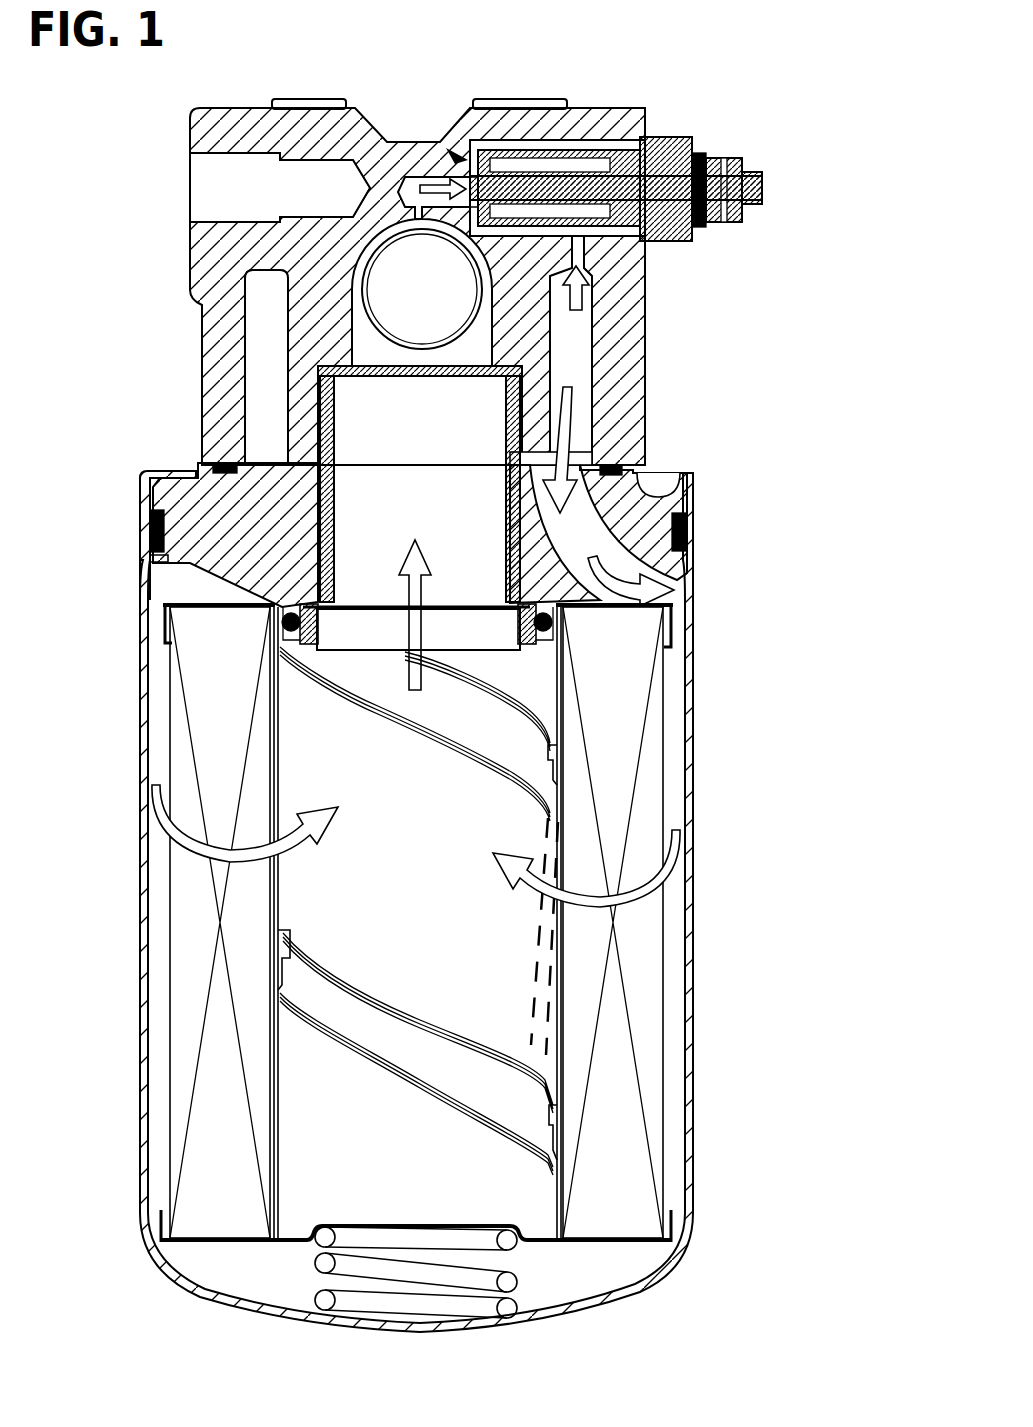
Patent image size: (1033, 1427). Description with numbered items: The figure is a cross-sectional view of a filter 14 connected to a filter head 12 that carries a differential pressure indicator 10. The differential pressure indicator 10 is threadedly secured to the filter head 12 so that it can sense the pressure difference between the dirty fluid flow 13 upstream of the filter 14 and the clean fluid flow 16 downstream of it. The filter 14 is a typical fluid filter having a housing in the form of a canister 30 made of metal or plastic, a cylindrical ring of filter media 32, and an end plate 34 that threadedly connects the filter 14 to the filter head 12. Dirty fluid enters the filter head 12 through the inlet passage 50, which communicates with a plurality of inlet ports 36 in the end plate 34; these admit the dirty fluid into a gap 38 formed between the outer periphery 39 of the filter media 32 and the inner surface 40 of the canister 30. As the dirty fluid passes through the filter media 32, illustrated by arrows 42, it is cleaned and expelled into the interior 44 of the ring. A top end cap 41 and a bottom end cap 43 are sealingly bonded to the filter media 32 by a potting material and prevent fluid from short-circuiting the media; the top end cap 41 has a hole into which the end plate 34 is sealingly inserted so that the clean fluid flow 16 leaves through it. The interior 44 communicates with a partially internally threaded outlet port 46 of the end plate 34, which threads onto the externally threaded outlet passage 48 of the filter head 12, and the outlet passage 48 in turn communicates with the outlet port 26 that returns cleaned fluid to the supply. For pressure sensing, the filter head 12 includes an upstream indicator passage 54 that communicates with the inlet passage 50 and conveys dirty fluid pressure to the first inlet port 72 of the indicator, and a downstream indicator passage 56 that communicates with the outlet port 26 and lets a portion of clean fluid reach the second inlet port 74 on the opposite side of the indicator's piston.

The differential pressure indicator 10 is at (697, 102).
The filter head 12 is at (188, 252).
The dirty fluid flow 13 is at (581, 292).
The filter 14 is at (795, 811).
The clean fluid flow 16 is at (433, 175).
The outlet port 26 is at (388, 295).
The canister 30 is at (145, 665).
The filter media 32 is at (213, 732).
The end plate 34 is at (152, 490).
The inlet ports 36 is at (572, 520).
The gap 38 is at (155, 1020).
The outer periphery 39 is at (665, 735).
The inner surface 40 is at (165, 1100).
The top end cap 41 is at (673, 626).
The arrows 42 is at (185, 855).
The bottom end cap 43 is at (688, 1252).
The interior 44 is at (310, 1123).
The outlet port 46 is at (473, 640).
The outlet passage 48 is at (375, 460).
The inlet passage 50 is at (262, 360).
The upstream indicator passage 54 is at (533, 150).
The downstream indicator passage 56 is at (392, 150).
The first inlet port 72 is at (584, 150).
The second inlet port 74 is at (446, 150).